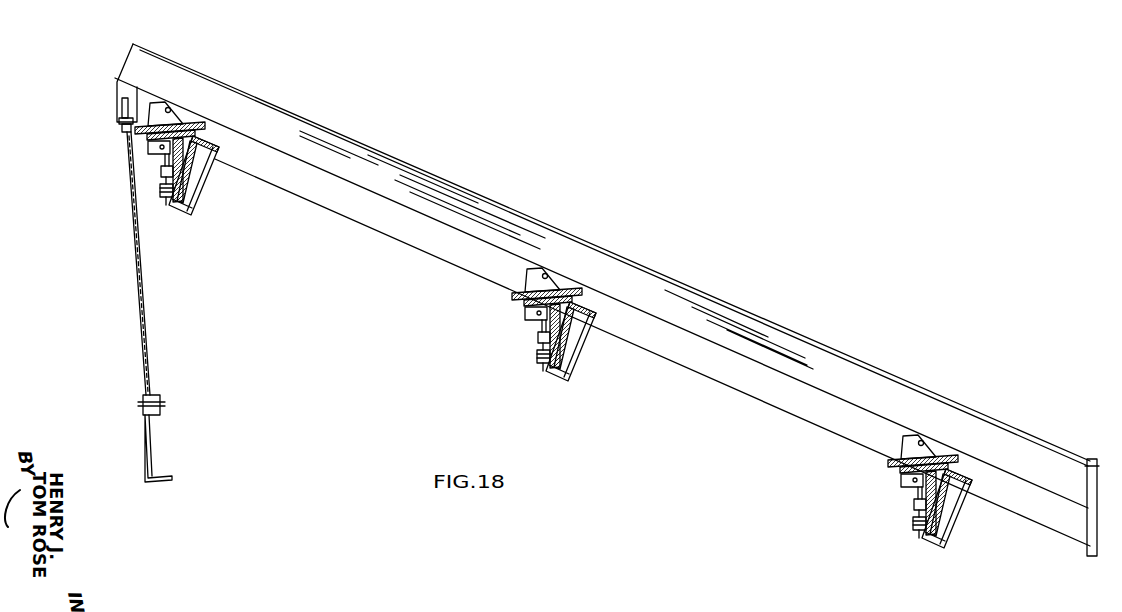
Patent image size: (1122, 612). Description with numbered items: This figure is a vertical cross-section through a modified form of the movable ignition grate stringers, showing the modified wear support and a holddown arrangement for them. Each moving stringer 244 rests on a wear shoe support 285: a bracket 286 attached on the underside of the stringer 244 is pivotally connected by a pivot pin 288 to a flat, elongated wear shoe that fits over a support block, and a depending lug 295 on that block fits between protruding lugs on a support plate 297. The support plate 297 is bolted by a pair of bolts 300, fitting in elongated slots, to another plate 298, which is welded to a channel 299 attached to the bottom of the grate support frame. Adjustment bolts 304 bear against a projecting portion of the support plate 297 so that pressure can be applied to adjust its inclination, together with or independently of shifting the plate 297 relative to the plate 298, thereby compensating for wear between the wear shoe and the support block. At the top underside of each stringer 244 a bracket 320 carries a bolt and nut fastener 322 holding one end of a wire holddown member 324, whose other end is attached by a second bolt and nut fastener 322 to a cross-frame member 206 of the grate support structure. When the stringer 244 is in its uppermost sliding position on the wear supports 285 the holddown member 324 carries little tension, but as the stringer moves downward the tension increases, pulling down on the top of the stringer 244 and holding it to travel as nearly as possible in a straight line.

The stringer 244 is at (872, 390).
The bracket 320 is at (173, 79).
The bolt and nut fastener 322 is at (122, 105).
The wire holddown member 324 is at (164, 263).
The cross-frame member 206 is at (137, 448).
The wear shoe support 285 is at (516, 291).
The pivot pin 288 is at (553, 278).
The bracket 286 is at (578, 296).
The channel 299 is at (607, 319).
The support plate 297 is at (510, 339).
The plate 298 is at (586, 342).
The depending lug 295 is at (535, 316).
The bolts 300 is at (511, 336).
The adjustment bolts 304 is at (543, 371).